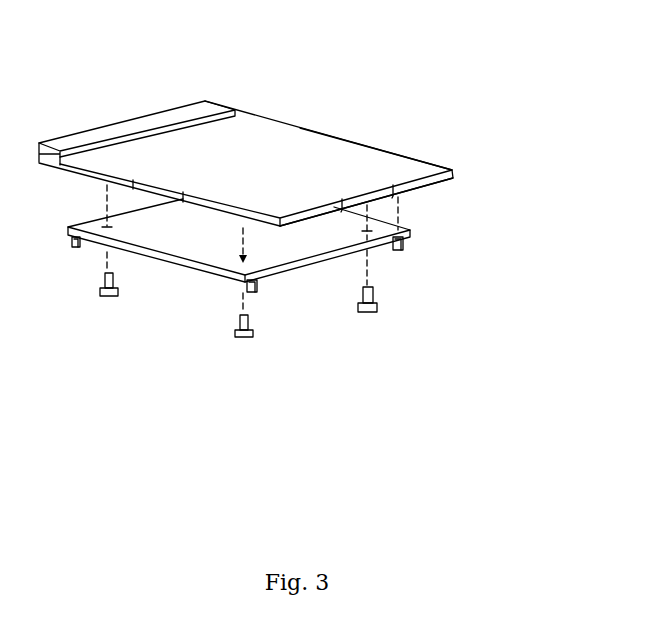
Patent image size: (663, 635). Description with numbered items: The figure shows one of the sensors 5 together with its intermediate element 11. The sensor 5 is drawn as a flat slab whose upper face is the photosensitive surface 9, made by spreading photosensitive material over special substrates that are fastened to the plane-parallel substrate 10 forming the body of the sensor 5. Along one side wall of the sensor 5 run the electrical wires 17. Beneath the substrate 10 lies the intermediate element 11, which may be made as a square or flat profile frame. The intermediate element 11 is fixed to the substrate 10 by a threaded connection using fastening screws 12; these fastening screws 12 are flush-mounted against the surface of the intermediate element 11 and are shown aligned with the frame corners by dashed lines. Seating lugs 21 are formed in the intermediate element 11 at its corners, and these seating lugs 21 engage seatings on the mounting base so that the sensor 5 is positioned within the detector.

The sensor 5 is at (278, 122).
The photosensitive surface 9 is at (400, 154).
The substrate 10 is at (428, 190).
The intermediate element 11 is at (297, 268).
The fastening screws 12 is at (238, 338).
The electrical wires 17 is at (128, 132).
The seating lugs 21 is at (77, 248).